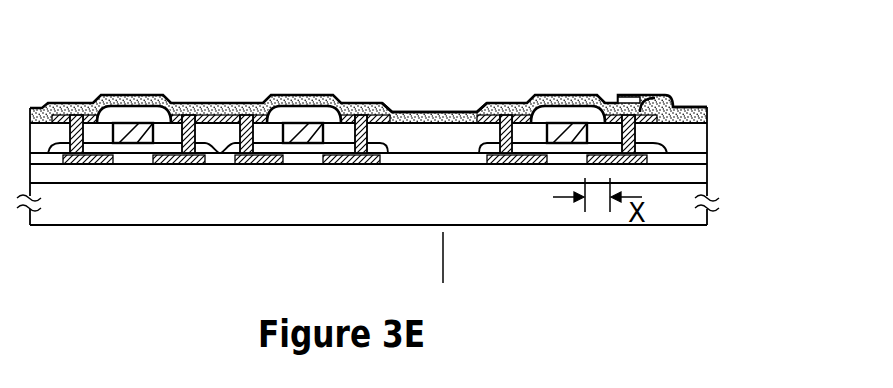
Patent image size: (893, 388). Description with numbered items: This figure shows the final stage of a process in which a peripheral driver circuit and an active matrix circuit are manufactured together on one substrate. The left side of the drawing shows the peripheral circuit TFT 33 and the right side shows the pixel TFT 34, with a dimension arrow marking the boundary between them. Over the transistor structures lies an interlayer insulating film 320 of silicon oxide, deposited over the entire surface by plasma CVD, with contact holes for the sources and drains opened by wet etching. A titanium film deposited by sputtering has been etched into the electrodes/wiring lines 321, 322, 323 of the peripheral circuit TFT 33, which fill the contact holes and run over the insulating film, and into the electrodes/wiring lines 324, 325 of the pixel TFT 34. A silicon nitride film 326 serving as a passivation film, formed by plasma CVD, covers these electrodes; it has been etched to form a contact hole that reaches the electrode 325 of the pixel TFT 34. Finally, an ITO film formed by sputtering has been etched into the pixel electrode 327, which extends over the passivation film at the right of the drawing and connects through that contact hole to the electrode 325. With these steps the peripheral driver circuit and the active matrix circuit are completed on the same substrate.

The interlayer insulating film 320 is at (418, 143).
The electrode/wiring line 321 is at (68, 120).
The electrode/wiring line 322 is at (235, 112).
The electrode/wiring line 323 is at (368, 122).
The electrode/wiring line 324 is at (513, 120).
The electrode 325 is at (622, 118).
The silicon nitride film 326 is at (440, 120).
The pixel electrode 327 is at (708, 105).
The peripheral circuit TFT 33 is at (441, 265).
The pixel TFT 34 is at (453, 265).